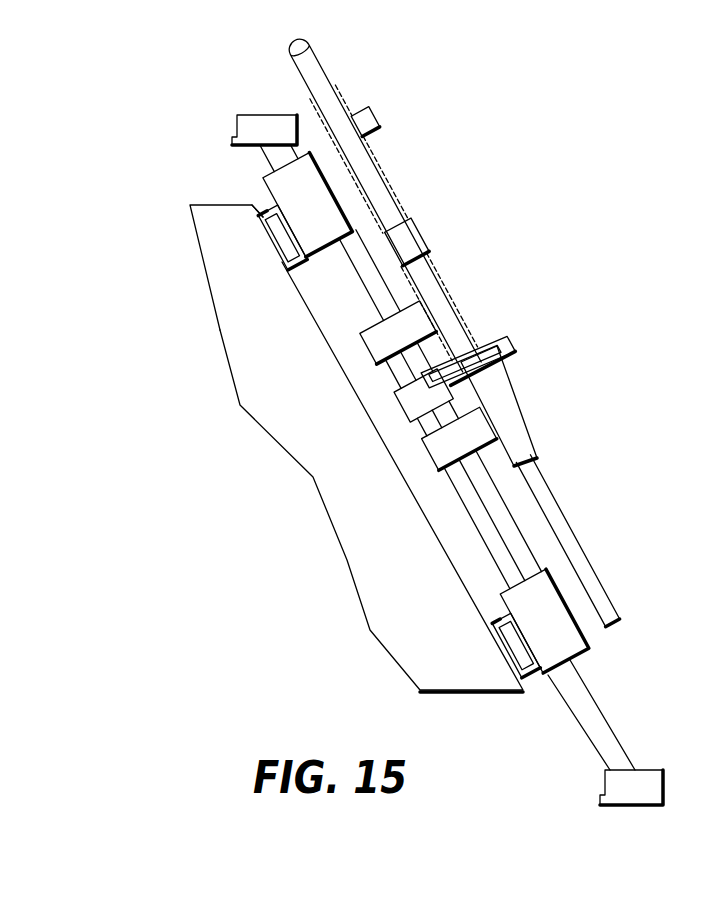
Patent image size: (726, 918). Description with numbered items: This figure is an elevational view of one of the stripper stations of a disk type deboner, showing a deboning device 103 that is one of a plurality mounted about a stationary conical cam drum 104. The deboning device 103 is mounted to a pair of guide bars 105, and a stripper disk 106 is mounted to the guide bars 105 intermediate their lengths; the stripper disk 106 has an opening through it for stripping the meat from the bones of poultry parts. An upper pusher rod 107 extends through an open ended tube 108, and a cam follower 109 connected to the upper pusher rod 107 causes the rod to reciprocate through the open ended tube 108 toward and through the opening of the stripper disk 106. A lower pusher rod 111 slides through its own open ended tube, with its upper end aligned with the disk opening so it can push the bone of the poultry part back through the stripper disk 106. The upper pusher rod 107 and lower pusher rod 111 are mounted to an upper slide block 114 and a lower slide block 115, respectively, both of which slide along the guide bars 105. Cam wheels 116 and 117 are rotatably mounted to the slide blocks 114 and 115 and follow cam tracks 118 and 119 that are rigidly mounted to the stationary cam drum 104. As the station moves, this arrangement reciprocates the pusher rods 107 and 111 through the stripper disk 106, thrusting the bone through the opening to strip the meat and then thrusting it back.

The deboning device 103 is at (470, 213).
The stationary conical cam drum 104 is at (445, 545).
The guide bars 105 is at (610, 715).
The stripper disk 106 is at (507, 337).
The upper pusher rod 107 is at (318, 77).
The open ended tube 108 is at (347, 100).
The cam follower 109 is at (378, 127).
The lower pusher rod 111 is at (583, 545).
The upper slide block 114 is at (283, 184).
The lower slide block 115 is at (520, 600).
The cam wheel 116 is at (277, 217).
The cam wheel 117 is at (508, 638).
The cam track 118 is at (290, 265).
The cam track 119 is at (537, 683).